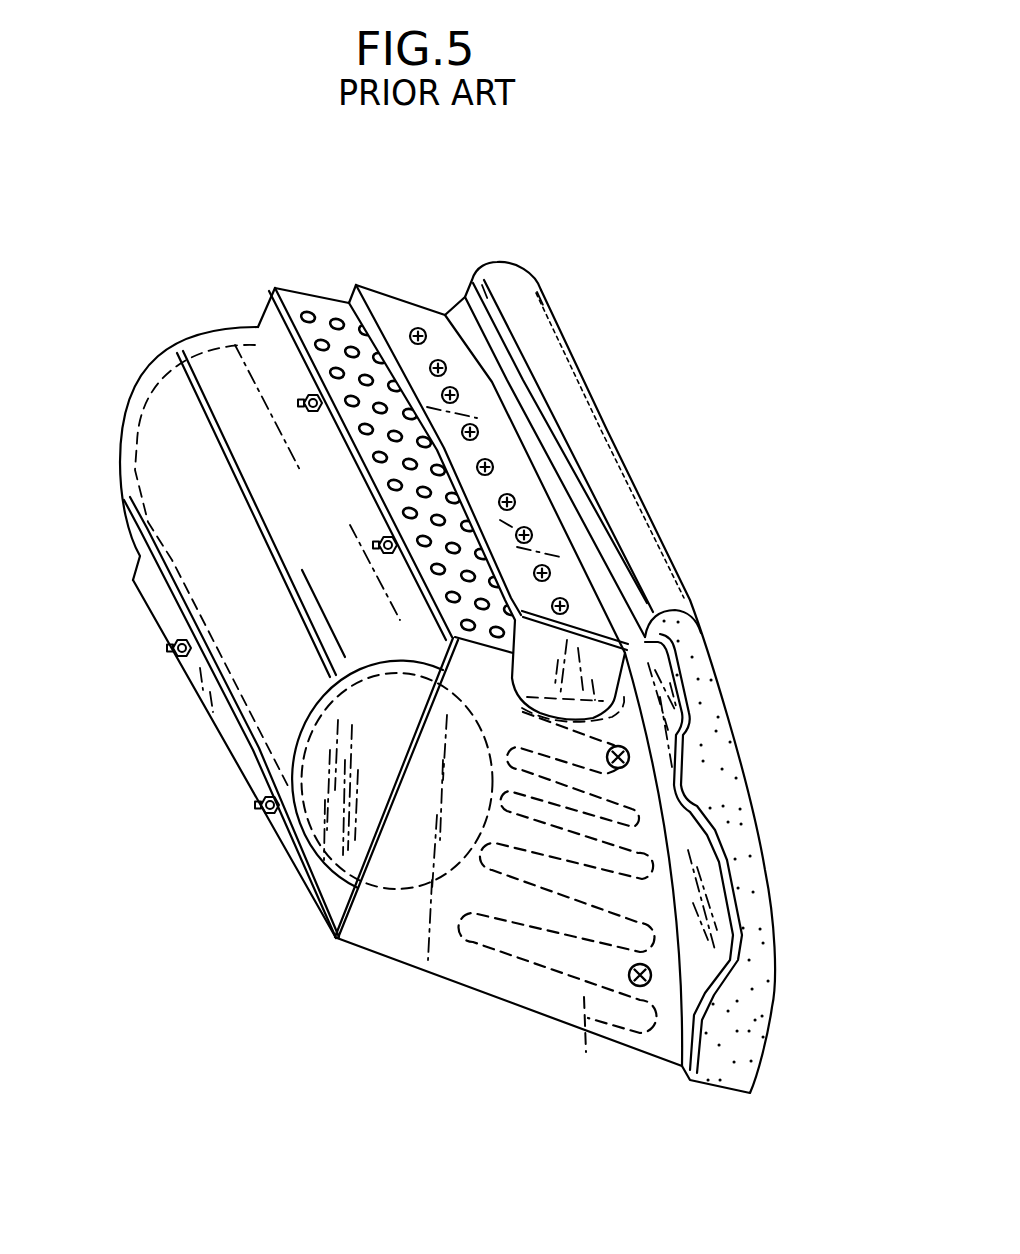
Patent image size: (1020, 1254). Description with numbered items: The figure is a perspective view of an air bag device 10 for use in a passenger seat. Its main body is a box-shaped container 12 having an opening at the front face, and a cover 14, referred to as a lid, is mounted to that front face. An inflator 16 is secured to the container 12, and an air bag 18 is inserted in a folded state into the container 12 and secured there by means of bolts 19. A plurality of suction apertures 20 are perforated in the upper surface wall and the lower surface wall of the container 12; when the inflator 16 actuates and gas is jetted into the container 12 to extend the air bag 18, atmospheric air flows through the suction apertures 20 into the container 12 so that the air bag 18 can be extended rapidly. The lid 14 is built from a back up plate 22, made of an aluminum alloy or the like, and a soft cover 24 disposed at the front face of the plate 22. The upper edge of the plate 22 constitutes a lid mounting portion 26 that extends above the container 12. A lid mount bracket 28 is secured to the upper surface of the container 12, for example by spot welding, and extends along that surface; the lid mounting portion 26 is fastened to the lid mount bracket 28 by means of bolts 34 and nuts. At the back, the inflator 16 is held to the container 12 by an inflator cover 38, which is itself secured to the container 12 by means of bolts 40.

The air bag device 10 is at (778, 457).
The container 12 is at (513, 987).
The cover 14 is at (774, 914).
The inflator 16 is at (323, 887).
The air bag 18 is at (586, 1052).
The bolts 19 is at (618, 768).
The suction apertures 20 is at (307, 311).
The back up plate 22 is at (728, 857).
The soft cover 24 is at (760, 987).
The lid mounting portion 26 is at (567, 580).
The lid mount bracket 28 is at (553, 680).
The bolts 34 is at (418, 328).
The inflator cover 38 is at (153, 490).
The bolts 40 is at (318, 405).